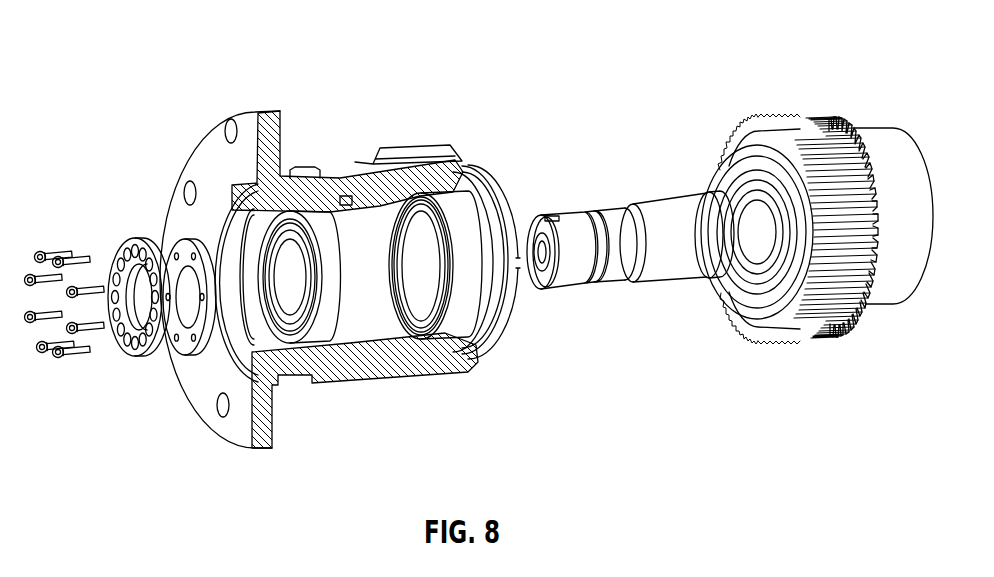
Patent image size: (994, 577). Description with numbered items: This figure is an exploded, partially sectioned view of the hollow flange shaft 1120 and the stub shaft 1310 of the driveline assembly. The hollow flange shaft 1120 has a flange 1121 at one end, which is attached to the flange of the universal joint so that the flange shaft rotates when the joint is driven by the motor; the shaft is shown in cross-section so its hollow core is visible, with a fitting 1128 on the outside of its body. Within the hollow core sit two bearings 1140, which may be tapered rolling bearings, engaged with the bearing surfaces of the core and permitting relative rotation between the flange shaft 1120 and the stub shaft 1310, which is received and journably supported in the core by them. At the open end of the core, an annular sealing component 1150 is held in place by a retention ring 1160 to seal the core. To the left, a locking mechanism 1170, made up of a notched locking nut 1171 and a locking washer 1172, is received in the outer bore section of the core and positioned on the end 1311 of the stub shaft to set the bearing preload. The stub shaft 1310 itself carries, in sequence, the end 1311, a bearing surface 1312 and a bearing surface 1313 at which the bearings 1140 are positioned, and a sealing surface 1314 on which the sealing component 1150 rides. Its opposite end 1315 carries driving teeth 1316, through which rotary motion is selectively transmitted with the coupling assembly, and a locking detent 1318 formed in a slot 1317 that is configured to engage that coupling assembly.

The hollow flange shaft 1120 is at (380, 160).
The flange 1121 is at (243, 125).
The plug 1128 is at (312, 161).
The bearings 1140 is at (440, 193).
The annular sealing component 1150 is at (483, 210).
The retention ring 1160 is at (509, 198).
The locking mechanism 1170 is at (118, 382).
The notched locking nut 1171 is at (120, 332).
The locking washer 1172 is at (172, 232).
The stub shaft 1310 is at (714, 108).
The end 1311 is at (563, 282).
The bearing surface 1312 is at (615, 262).
The bearing surface 1313 is at (720, 273).
The sealing surface 1314 is at (777, 297).
The end 1315 is at (882, 298).
The driving teeth 1316 is at (850, 153).
The slot 1317 is at (767, 122).
The locking detent 1318 is at (797, 127).